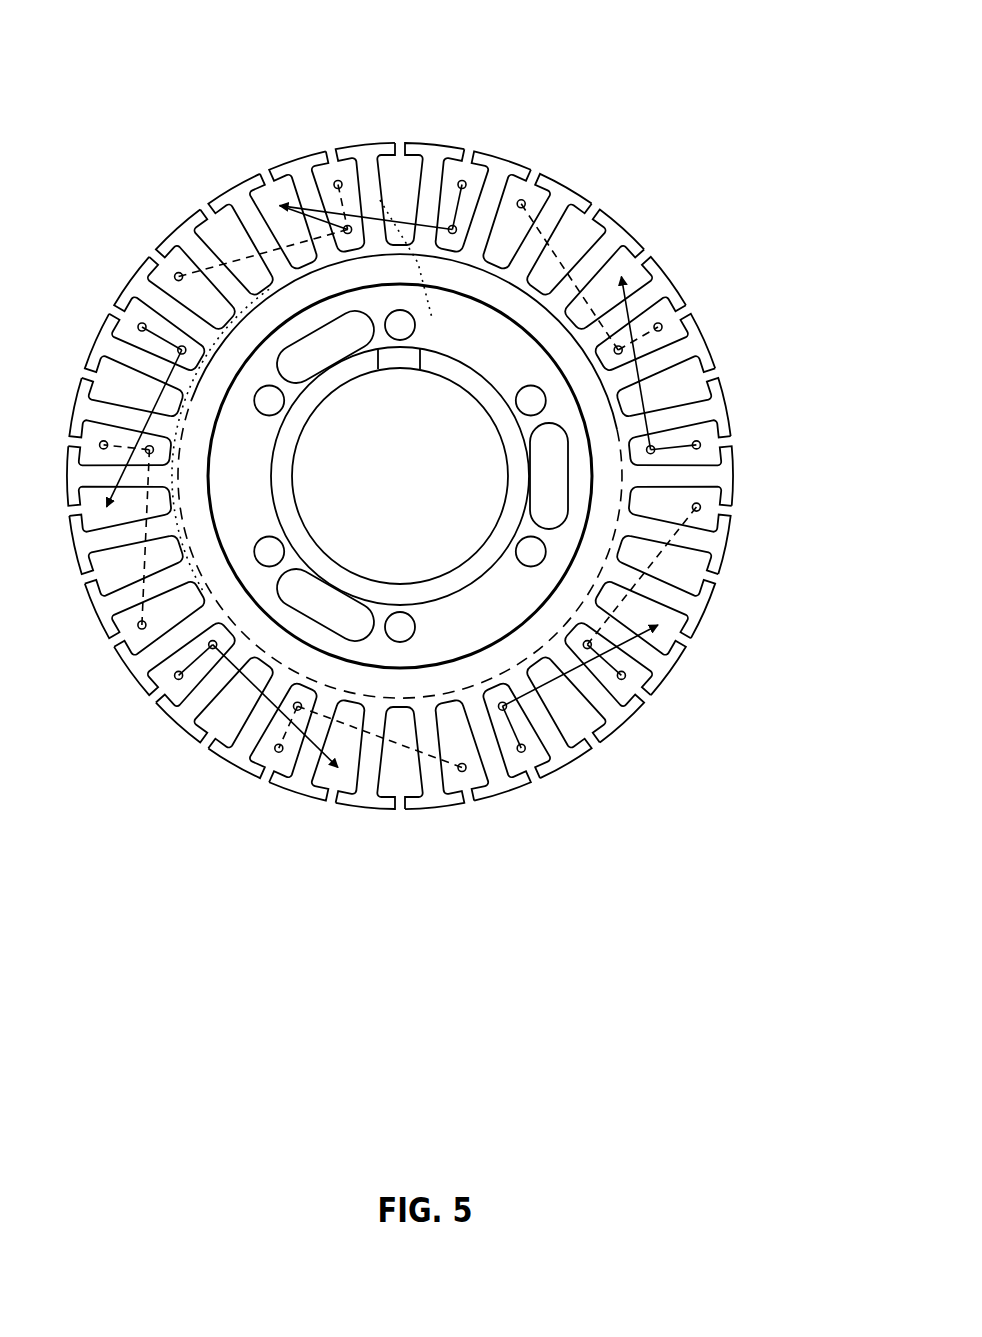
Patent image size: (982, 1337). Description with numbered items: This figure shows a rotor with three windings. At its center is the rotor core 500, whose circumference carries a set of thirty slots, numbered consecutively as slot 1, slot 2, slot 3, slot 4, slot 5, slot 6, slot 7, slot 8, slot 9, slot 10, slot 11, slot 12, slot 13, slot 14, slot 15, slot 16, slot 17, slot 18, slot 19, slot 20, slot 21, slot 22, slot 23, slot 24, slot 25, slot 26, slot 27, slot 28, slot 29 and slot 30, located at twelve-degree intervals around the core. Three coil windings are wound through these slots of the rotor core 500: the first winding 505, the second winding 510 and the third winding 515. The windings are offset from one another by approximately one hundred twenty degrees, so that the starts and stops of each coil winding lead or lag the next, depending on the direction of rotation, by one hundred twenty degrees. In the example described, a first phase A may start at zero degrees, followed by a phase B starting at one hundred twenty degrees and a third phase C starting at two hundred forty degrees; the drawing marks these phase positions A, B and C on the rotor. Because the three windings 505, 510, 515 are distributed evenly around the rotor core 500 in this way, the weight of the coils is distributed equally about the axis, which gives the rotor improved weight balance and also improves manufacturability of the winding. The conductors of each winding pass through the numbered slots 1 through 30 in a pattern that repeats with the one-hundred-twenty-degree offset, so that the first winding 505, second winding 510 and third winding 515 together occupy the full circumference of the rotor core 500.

The slot 1 is at (420, 167).
The slot 2 is at (479, 180).
The slot 3 is at (533, 206).
The slot 4 is at (582, 243).
The slot 5 is at (623, 290).
The slot 6 is at (656, 344).
The slot 7 is at (684, 404).
The slot 8 is at (699, 467).
The slot 9 is at (697, 526).
The slot 10 is at (681, 583).
The slot 11 is at (649, 635).
The slot 12 is at (607, 680).
The slot 13 is at (556, 721).
The slot 14 is at (499, 754).
The slot 15 is at (438, 775).
The slot 16 is at (379, 784).
The slot 17 is at (321, 771).
The slot 18 is at (266, 745).
The slot 19 is at (217, 708).
The slot 20 is at (177, 662).
The slot 21 is at (140, 607).
The slot 22 is at (112, 547).
The slot 23 is at (99, 485).
The slot 24 is at (101, 425).
The slot 25 is at (120, 369).
The slot 26 is at (151, 317).
The slot 27 is at (192, 271).
The slot 28 is at (243, 231).
The slot 29 is at (301, 198).
The slot 30 is at (362, 176).
The rotor core 500 is at (433, 565).
The first winding 505 is at (430, 198).
The second winding 510 is at (581, 597).
The third winding 515 is at (150, 612).
The first phase A is at (428, 320).
The phase B is at (272, 556).
The third phase C is at (531, 557).